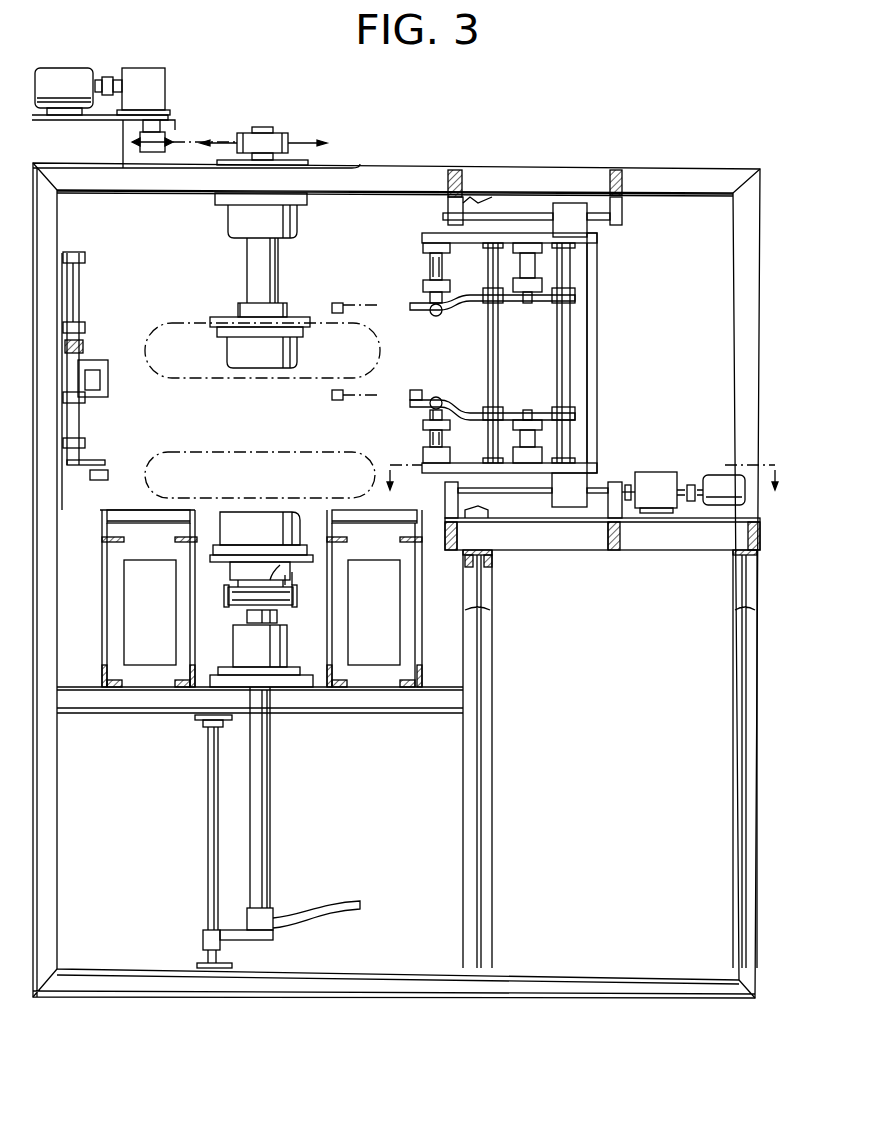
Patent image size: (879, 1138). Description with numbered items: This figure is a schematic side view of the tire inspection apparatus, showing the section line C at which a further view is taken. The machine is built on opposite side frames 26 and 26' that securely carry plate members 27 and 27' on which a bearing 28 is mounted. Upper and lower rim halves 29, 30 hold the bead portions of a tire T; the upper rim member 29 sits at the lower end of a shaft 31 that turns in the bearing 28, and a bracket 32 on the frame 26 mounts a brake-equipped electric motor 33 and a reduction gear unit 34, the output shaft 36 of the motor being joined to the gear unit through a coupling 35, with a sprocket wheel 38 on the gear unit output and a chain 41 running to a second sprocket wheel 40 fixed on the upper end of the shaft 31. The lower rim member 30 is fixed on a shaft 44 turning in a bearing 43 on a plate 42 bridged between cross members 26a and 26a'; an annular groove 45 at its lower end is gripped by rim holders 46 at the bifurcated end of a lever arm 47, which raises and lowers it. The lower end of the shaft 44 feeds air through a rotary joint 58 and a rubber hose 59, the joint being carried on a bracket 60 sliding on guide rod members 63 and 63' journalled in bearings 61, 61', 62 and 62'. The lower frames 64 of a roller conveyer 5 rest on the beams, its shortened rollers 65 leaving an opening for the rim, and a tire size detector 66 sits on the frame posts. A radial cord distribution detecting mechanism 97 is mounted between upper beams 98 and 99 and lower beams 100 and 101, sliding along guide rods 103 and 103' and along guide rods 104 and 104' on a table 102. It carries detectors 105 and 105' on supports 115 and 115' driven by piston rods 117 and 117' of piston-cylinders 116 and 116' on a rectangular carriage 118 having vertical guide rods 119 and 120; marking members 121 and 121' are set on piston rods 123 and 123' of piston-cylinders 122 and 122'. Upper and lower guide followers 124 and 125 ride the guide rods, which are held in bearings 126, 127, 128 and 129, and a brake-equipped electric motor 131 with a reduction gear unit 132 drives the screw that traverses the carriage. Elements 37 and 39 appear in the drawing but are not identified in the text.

The roller conveyer 5 is at (123, 505).
The side frame 26 is at (79, 381).
The side frame 26' is at (396, 560).
The cross member 26a is at (260, 722).
The cross member 26a' is at (260, 722).
The plate member 27 is at (196, 149).
The plate member 27' is at (395, 210).
The bearing 28 is at (226, 218).
The upper rim half 29 is at (212, 322).
The lower rim half 30 is at (200, 542).
The shaft 31 is at (275, 263).
The bracket 32 is at (66, 148).
The brake-equipped electric motor 33 is at (55, 72).
The reduction gear unit 34 is at (155, 70).
The coupling 35 is at (109, 76).
The output shaft 36 is at (98, 80).
The coupling half 37 is at (118, 80).
The sprocket wheel 38 is at (140, 138).
The shaft end 39 is at (160, 130).
The sprocket wheel 40 is at (292, 138).
The chain 41 is at (200, 142).
The plate 42 is at (308, 672).
The bearing 43 is at (232, 648).
The shaft 44 is at (278, 617).
The annular groove 45 is at (290, 575).
The rim holders 46 is at (225, 590).
The lever arm 47 is at (222, 605).
The rotary joint 58 is at (268, 912).
The rubber hose 59 is at (350, 900).
The bracket 60 is at (235, 942).
The bearing 61 is at (169, 736).
The bearing 61' is at (169, 736).
The bearing 62 is at (171, 934).
The bearing 62' is at (171, 934).
The guide rod member 63 is at (162, 828).
The guide rod member 63' is at (162, 828).
The lower frames 64 is at (107, 617).
The shortened rollers 65 is at (110, 505).
The tire size detector 66 is at (92, 455).
The radial cord distribution detecting mechanism 97 is at (598, 350).
The upper beam 98 is at (455, 170).
The upper beam 99 is at (616, 170).
The lower beam 100 is at (478, 575).
The lower beam 101 is at (730, 565).
The table 102 is at (607, 540).
The guide rod 103 is at (498, 156).
The guide rod 103' is at (498, 156).
The guide rod 104 is at (533, 536).
The guide rod 104' is at (533, 536).
The detector 105 is at (361, 332).
The detector 105' is at (378, 365).
The detector support 115 is at (445, 271).
The detector support 115' is at (487, 416).
The fluid-operated piston-cylinder 116 is at (578, 273).
The fluid-operated piston-cylinder 116' is at (580, 436).
The piston rod 117 is at (542, 353).
The piston rod 117' is at (605, 353).
The carriage 118 is at (596, 308).
The vertical guide rod 119 is at (498, 353).
The vertical guide rod 120 is at (560, 368).
The marking member 121 is at (492, 317).
The marking member 121' is at (492, 379).
The fluid-operated piston-cylinder 122 is at (400, 263).
The fluid-operated piston-cylinder 122' is at (384, 430).
The piston rod 123 is at (402, 290).
The piston rod 123' is at (397, 415).
The upper guide follower 124 is at (568, 200).
The lower guide follower 125 is at (570, 507).
The bearing 126 is at (622, 216).
The bearing 127 is at (448, 215).
The bearing 128 is at (630, 508).
The bearing 129 is at (448, 495).
The brake-equipped electric motor 131 is at (718, 478).
The reduction gear unit 132 is at (655, 472).
The tire T is at (175, 323).
The section line C- C is at (585, 463).